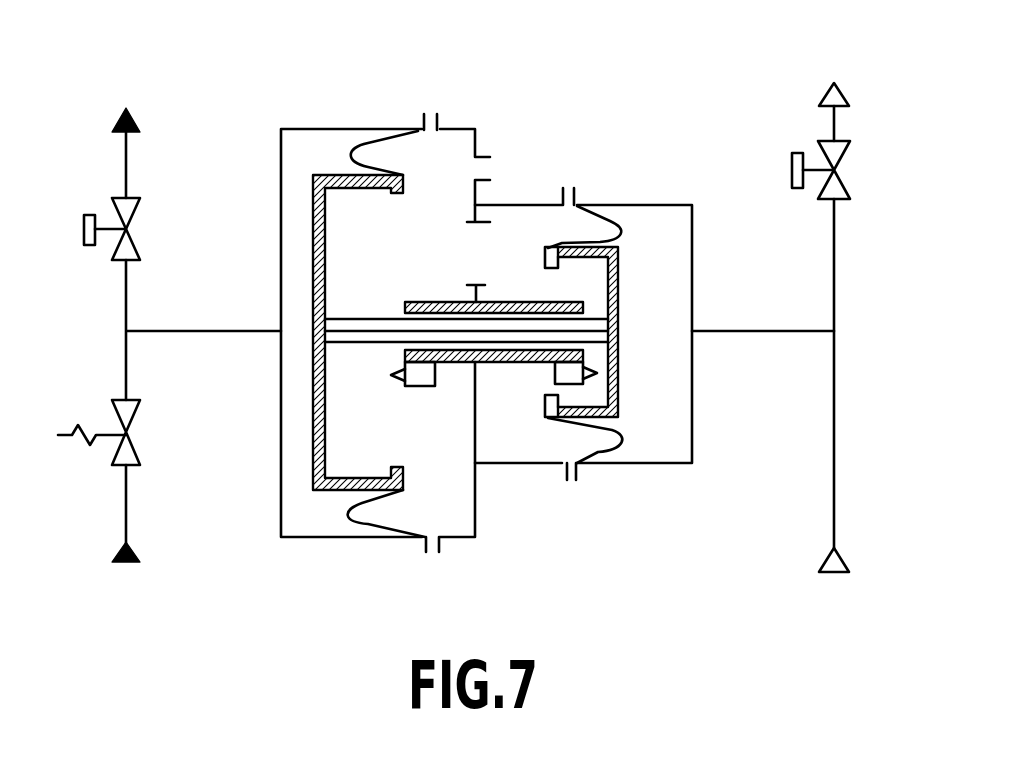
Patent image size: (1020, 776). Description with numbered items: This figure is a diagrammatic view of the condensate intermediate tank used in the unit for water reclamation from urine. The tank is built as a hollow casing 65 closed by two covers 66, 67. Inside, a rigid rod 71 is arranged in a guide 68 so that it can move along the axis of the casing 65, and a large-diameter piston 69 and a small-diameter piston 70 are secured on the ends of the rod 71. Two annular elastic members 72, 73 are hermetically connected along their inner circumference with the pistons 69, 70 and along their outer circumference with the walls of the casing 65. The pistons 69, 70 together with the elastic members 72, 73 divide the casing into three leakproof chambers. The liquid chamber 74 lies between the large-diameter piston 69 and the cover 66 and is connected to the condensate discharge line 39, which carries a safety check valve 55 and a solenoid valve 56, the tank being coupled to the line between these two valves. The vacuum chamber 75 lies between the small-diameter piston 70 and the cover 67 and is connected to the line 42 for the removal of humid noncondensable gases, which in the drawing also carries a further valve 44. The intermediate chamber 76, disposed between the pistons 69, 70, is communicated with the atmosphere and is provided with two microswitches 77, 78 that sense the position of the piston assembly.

The condensate discharge line 39 is at (122, 368).
The line for pumping out condensate and noncondensable gases 42 is at (836, 455).
The outlet valve 44 is at (842, 147).
The safety check valve 55 is at (120, 452).
The solenoid valve 56 is at (122, 212).
The hollow casing 65 is at (525, 464).
The cover 66 is at (281, 152).
The cover 67 is at (692, 272).
The guide 68 is at (520, 362).
The large-diameter piston 69 is at (324, 390).
The small-diameter piston 70 is at (617, 352).
The rigid rod 71 is at (365, 320).
The annular elastic member 72 is at (372, 148).
The annular elastic member 73 is at (604, 222).
The liquid chamber 74 is at (282, 253).
The vacuum chamber 75 is at (655, 222).
The intermediate chamber 76 is at (510, 227).
The microswitch 77 is at (428, 388).
The microswitch 78 is at (568, 386).